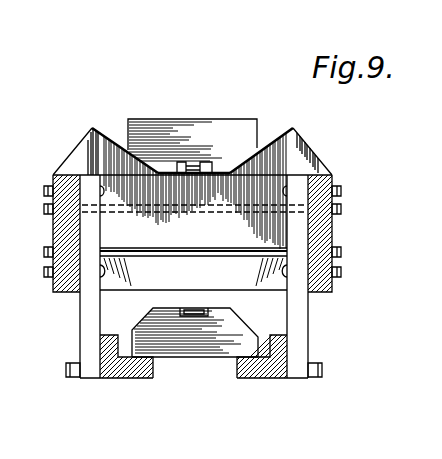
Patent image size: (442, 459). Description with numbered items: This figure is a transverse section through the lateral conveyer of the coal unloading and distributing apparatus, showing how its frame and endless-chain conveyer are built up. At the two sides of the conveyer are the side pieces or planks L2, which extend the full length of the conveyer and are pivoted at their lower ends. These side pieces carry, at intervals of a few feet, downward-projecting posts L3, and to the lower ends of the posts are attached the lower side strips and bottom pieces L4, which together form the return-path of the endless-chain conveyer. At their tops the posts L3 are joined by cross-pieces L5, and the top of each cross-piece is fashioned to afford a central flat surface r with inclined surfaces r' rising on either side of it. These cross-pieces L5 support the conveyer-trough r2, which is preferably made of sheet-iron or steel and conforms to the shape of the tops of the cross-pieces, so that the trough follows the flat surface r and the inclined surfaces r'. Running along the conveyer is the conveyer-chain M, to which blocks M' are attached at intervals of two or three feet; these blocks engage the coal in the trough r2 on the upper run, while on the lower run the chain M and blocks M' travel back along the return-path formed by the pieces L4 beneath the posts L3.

The inclined surfaces r' is at (192, 151).
The conveyer-trough r2 is at (108, 140).
The flat surface r is at (194, 190).
The side pieces L2 is at (368, 230).
The posts L3 is at (335, 312).
The lower side strips and bottom pieces L4 is at (270, 378).
The cross-pieces L5 is at (193, 209).
The conveyer-chain M is at (187, 198).
The blocks M' is at (193, 242).